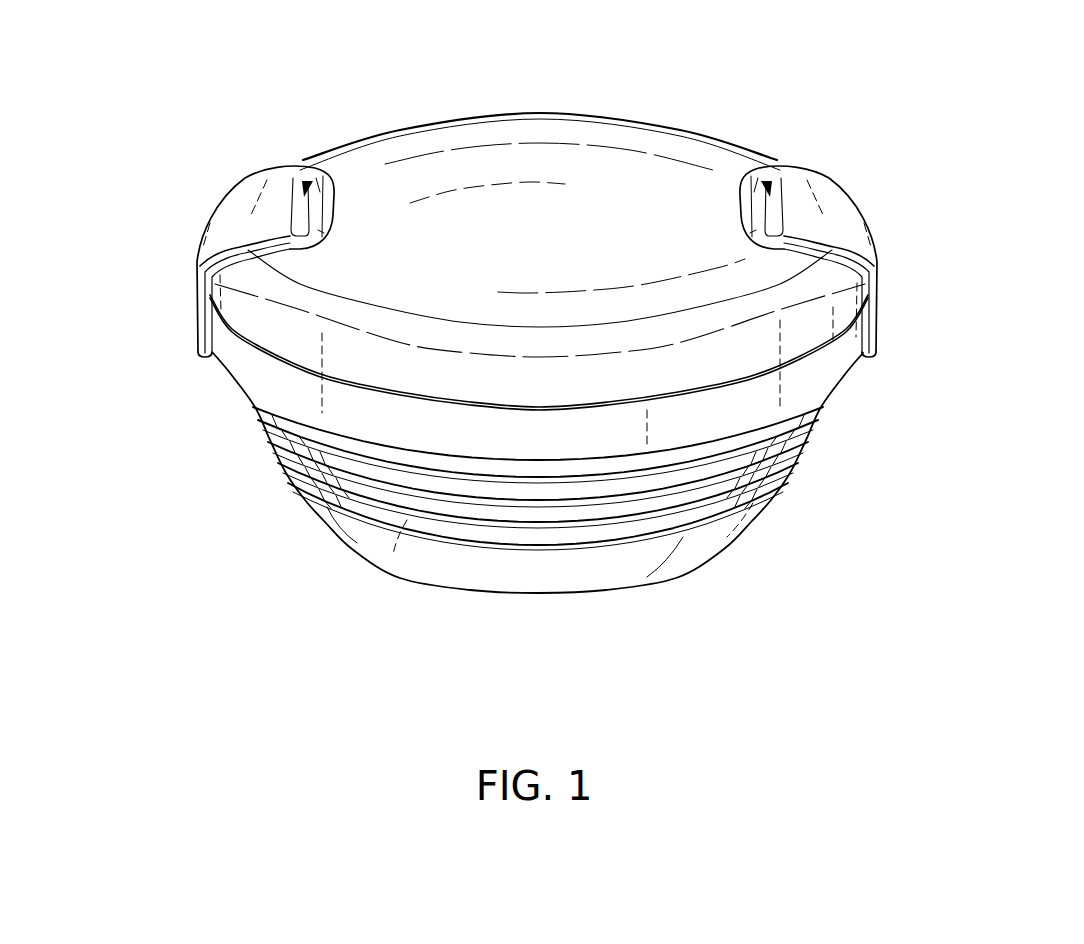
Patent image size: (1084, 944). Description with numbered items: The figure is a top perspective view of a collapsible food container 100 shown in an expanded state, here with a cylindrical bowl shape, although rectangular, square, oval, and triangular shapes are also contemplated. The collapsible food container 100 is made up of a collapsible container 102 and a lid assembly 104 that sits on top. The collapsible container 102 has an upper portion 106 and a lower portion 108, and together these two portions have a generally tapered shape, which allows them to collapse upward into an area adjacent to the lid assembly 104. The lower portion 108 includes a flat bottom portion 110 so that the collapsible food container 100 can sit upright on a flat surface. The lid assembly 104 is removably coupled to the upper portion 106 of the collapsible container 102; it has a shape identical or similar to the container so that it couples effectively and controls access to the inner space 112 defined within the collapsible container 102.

The collapsible food container 100 is at (560, 37).
The collapsible container 102 is at (288, 523).
The lid assembly 104 is at (203, 160).
The upper portion 106 is at (812, 430).
The lower portion 108 is at (715, 538).
The flat bottom portion 110 is at (562, 594).
The inner space 112 is at (408, 522).